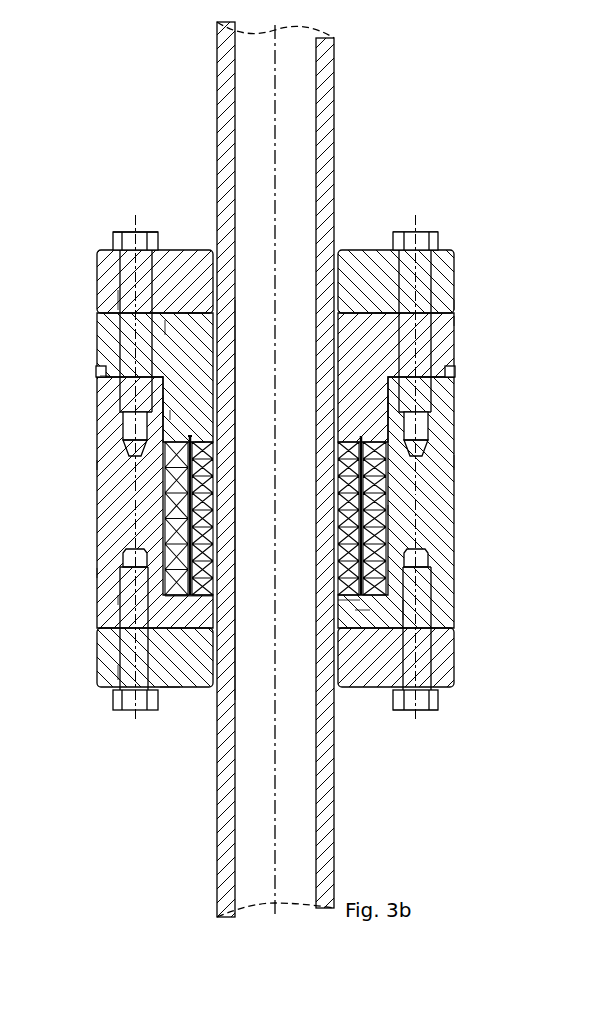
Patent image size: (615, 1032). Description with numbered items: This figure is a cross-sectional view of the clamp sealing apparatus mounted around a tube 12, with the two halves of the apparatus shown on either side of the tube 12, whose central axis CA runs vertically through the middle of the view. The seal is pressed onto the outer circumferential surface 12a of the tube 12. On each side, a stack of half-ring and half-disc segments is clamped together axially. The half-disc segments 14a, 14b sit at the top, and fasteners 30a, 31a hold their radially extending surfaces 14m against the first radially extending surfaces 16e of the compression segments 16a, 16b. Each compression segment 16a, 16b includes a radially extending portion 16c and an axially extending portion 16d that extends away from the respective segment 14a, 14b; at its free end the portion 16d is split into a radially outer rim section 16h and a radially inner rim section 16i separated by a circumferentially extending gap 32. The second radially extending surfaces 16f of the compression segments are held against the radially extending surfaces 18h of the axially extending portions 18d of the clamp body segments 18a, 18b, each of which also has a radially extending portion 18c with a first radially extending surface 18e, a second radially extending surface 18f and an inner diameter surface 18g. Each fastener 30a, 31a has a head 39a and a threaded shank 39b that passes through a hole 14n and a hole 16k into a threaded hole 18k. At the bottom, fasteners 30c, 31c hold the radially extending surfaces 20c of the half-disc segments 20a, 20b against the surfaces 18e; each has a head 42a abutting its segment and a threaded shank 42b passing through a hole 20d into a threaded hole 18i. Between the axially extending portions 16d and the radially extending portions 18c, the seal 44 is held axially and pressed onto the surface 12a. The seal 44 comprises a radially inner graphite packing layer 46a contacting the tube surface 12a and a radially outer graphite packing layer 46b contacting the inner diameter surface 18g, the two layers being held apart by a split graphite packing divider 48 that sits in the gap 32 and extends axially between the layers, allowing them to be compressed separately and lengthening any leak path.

The tube 12 is at (328, 152).
The outer circumferential surface of tube 12a is at (228, 546).
The central axis CA is at (292, 470).
The segment 14a is at (458, 270).
The segment 14b is at (95, 266).
The radially extending surface 14m is at (190, 315).
The hole 14n is at (442, 302).
The compression segment 16a is at (466, 350).
The compression segment 16b is at (94, 338).
The radially extending portion 16c is at (170, 327).
The axially extending portion 16d is at (128, 400).
The first radially extending surface 16e is at (112, 300).
The second radially extending surface 16f is at (100, 372).
The radially outer rim section 16h is at (175, 413).
The radially inner rim section 16i is at (200, 447).
The hole 16k is at (440, 320).
The clamp body segment 18a is at (460, 522).
The clamp body segment 18b is at (92, 502).
The radially extending portion 18c is at (363, 612).
The axially extending portion 18d is at (100, 465).
The first radially extending surface 18e is at (118, 600).
The second radially extending surface 18f is at (357, 602).
The inner diameter surface 18g is at (452, 465).
The radially extending surface 18h is at (440, 370).
The threaded hole 18i is at (97, 573).
The threaded hole 18k is at (450, 412).
The segment 20a is at (460, 645).
The segment 20b is at (94, 648).
The radially extending surface 20c is at (168, 688).
The hole 20d is at (117, 673).
The fastener 30a is at (420, 232).
The fastener 30c is at (432, 710).
The fastener 31a is at (128, 232).
The fastener 31c is at (120, 708).
The circumferentially extending gap 32 is at (195, 432).
The head 39a is at (152, 232).
The threaded shank 39b is at (100, 379).
The head 42a is at (397, 708).
The threaded shank 42b is at (405, 612).
The seal 44 is at (223, 541).
The radially inner graphite packing layer 46a is at (216, 483).
The radially outer graphite packing layer 46b is at (162, 518).
The split graphite packing divider 48 is at (180, 607).